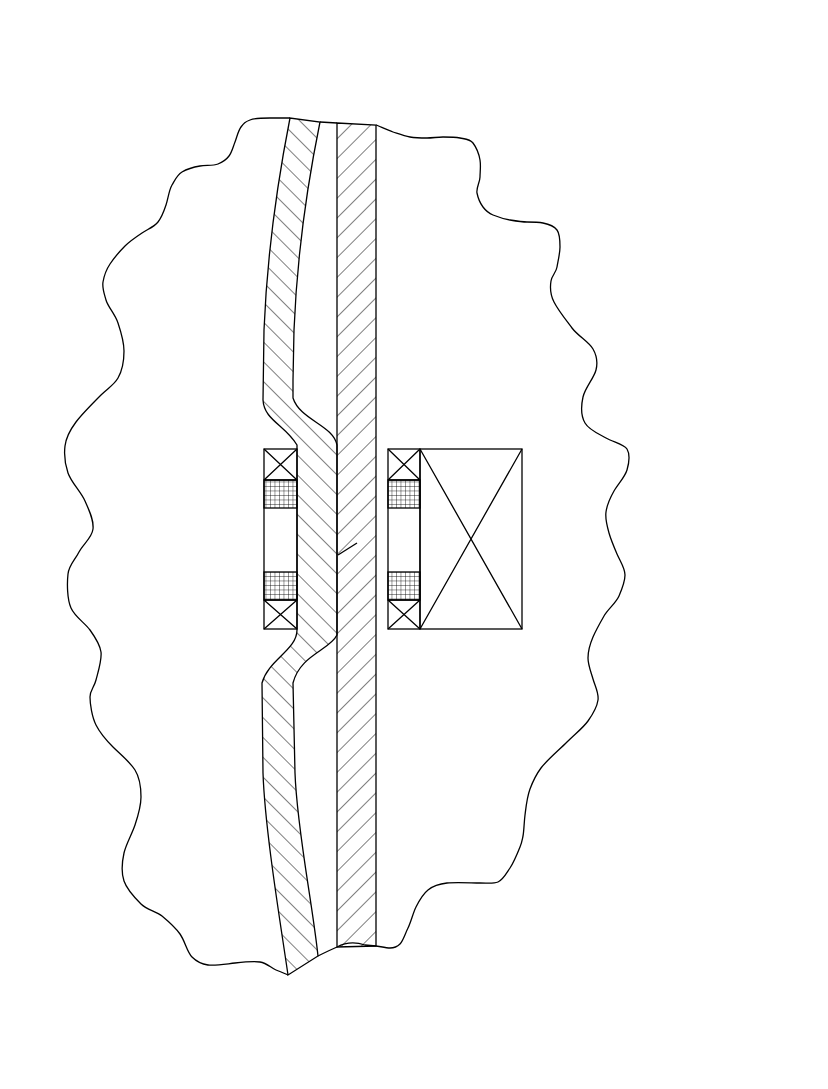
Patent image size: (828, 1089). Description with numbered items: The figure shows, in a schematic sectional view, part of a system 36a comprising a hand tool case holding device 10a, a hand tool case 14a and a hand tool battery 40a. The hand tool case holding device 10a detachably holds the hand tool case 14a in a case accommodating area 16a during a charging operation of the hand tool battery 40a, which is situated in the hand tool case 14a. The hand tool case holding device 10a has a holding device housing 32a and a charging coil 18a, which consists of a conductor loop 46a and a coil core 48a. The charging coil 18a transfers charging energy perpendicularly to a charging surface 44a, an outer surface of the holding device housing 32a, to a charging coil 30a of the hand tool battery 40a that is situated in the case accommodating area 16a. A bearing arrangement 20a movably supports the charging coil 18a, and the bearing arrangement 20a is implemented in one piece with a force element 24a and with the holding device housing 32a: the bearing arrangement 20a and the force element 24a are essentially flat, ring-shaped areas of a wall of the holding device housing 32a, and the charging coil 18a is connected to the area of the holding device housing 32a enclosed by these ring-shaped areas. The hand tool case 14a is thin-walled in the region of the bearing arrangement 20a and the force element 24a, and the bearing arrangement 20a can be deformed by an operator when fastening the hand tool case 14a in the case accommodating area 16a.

The hand tool case holding device 10a is at (216, 96).
The hand tool case 14a is at (347, 504).
The case accommodating area 16a is at (447, 110).
The charging coil 18a is at (240, 528).
The bearing arrangement 20a is at (240, 546).
The force element 24a is at (240, 546).
The charging coil 30a is at (445, 528).
The holding device housing 32a is at (282, 238).
The system 36a is at (332, 90).
The hand tool battery 40a is at (498, 473).
The charging surface 44a is at (338, 556).
The conductor loop 46a is at (273, 617).
The coil core 48a is at (273, 585).